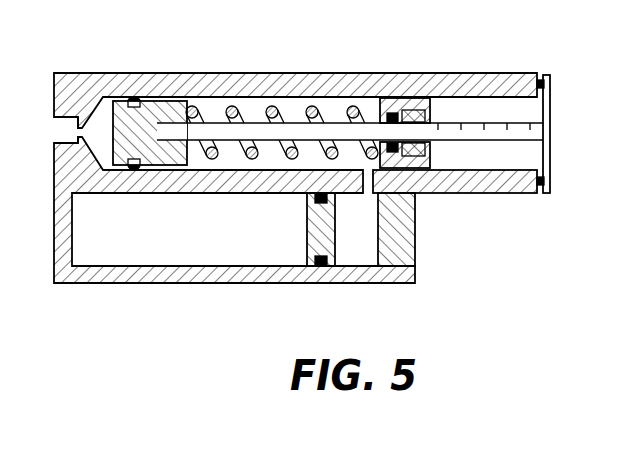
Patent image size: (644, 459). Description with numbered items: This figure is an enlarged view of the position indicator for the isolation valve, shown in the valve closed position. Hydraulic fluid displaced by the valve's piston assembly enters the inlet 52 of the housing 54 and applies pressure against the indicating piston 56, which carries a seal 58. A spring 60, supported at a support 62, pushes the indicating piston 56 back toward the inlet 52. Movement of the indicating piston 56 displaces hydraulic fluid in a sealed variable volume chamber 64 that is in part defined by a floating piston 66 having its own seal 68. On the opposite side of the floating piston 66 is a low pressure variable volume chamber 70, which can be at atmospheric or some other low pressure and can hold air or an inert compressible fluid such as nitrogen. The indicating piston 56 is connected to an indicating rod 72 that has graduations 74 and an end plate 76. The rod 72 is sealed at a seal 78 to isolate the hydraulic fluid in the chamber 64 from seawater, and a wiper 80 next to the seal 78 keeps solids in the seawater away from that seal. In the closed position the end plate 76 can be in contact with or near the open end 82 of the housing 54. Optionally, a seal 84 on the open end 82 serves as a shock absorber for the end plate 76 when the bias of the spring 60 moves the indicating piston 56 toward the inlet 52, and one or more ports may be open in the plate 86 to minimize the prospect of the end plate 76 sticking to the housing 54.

The inlet 52 is at (58, 131).
The housing 54 is at (91, 73).
The indicating piston 56 is at (164, 113).
The seal 58 is at (134, 98).
The spring 60 is at (353, 106).
The support 62 is at (422, 160).
The sealed variable volume chamber 64 is at (357, 228).
The floating piston 66 is at (317, 232).
The seal 68 is at (321, 266).
The low pressure variable volume chamber 70 is at (189, 231).
The indicating rod 72 is at (296, 127).
The graduations 74 is at (487, 125).
The end plate 76 is at (547, 85).
The seal 78 is at (392, 113).
The wiper 80 is at (411, 115).
The open end 82 is at (535, 157).
The seal 84 is at (542, 81).
The plate 86 is at (554, 143).